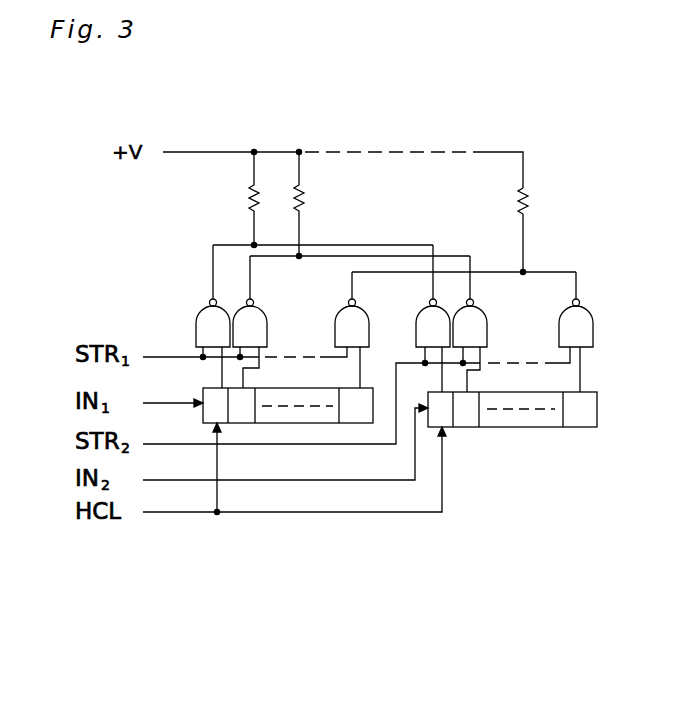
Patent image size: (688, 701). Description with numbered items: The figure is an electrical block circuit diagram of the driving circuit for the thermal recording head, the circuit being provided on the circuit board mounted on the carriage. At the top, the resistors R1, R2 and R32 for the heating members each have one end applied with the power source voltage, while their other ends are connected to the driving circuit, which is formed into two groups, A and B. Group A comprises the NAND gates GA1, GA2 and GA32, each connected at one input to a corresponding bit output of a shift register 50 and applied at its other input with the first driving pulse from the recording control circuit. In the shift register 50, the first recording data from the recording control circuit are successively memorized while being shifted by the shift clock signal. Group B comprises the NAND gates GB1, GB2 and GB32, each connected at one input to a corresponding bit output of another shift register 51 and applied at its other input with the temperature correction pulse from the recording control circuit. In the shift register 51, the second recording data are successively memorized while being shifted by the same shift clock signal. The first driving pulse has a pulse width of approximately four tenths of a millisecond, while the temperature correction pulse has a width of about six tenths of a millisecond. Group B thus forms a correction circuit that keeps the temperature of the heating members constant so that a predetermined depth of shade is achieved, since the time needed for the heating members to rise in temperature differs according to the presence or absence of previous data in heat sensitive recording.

The shift register 50 is at (308, 417).
The shift register 51 is at (547, 418).
The resistor R1 is at (263, 197).
The resistor R2 is at (307, 200).
The resistor R32 is at (527, 205).
The NAND gate GA1 is at (213, 324).
The NAND gate GA2 is at (250, 324).
The NAND gate GA32 is at (352, 324).
The NAND gate GB1 is at (433, 324).
The NAND gate GB2 is at (470, 324).
The NAND gate GB32 is at (576, 324).